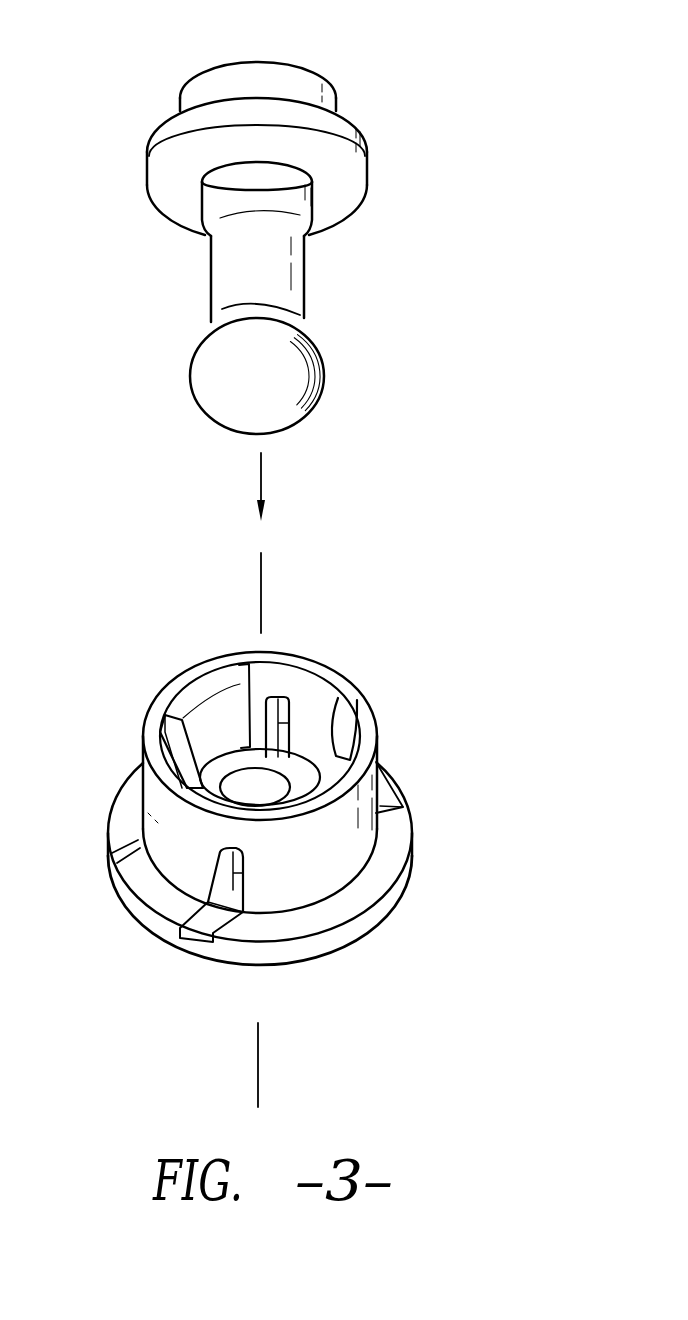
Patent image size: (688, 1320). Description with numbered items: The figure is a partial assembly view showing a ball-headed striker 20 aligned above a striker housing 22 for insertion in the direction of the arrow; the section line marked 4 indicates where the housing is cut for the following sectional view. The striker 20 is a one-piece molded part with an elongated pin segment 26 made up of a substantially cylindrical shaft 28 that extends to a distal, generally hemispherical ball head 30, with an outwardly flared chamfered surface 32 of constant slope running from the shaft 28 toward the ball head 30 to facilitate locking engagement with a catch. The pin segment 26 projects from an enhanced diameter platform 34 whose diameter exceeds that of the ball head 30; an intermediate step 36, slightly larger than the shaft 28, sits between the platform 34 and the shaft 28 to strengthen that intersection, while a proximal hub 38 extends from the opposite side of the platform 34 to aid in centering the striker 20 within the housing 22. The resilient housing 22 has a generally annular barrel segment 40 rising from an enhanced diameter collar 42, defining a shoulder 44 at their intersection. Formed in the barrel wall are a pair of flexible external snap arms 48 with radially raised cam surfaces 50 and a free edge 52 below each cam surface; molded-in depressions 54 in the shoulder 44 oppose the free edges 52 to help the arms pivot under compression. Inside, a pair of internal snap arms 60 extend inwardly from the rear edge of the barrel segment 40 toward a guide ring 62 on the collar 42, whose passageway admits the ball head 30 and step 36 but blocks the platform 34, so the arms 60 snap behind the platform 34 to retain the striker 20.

The striker 20 is at (160, 108).
The housing 22 is at (352, 678).
The pin segment 26 is at (367, 435).
The shaft 28 is at (210, 251).
The ball head 30 is at (226, 398).
The chamfered surface 32 is at (222, 308).
The enhanced diameter platform 34 is at (346, 122).
The intermediate step 36 is at (215, 185).
The proximal hub 38 is at (287, 65).
The barrel segment 40 is at (165, 687).
The enhanced diameter collar 42 is at (378, 920).
The shoulder 44 is at (383, 857).
The external snap arms 48 is at (384, 763).
The cam surfaces 50 is at (157, 843).
The free edge 52 is at (189, 906).
The molded-in depressions 54 is at (385, 800).
The internal snap arms 60 is at (210, 720).
The guide ring 62 is at (305, 776).
The section line 4- 4 is at (247, 585).